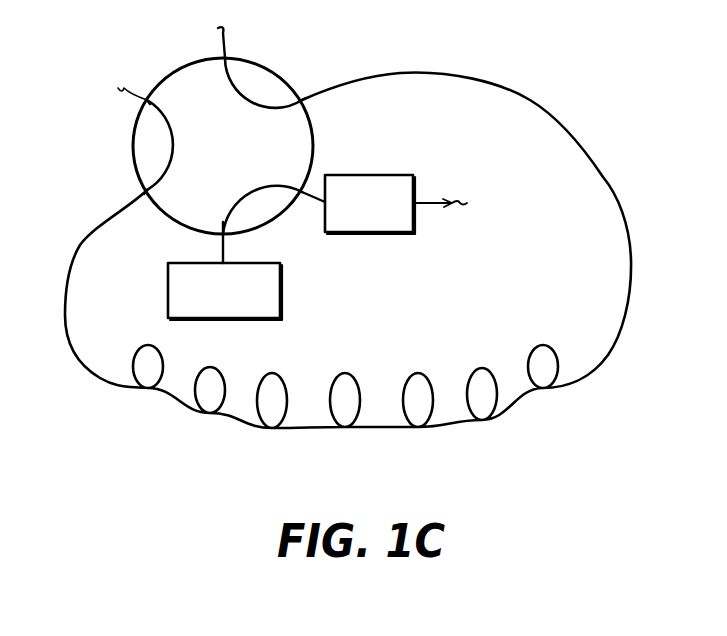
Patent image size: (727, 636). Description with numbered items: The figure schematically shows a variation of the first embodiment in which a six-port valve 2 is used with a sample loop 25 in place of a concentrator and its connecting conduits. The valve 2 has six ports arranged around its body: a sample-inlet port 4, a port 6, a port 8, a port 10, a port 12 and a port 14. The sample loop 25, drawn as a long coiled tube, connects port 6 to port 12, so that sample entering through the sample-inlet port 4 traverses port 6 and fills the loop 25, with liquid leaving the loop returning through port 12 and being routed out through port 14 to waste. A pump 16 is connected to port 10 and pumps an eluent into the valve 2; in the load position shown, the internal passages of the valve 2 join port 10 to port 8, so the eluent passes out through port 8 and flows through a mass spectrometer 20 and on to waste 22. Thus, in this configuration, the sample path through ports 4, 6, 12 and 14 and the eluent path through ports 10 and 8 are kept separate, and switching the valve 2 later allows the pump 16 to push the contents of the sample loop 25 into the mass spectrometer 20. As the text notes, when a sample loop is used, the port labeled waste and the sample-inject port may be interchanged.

The six-port valve 2 is at (231, 160).
The sample-inlet port 4 is at (226, 58).
The port 6 is at (303, 101).
The port 8 is at (301, 194).
The port 10 is at (222, 236).
The port 12 is at (147, 190).
The port 14 is at (149, 103).
The pump 16 is at (257, 319).
The mass spectrometer 20 is at (398, 232).
The waste 22 is at (452, 207).
The sample loop 25 is at (604, 178).